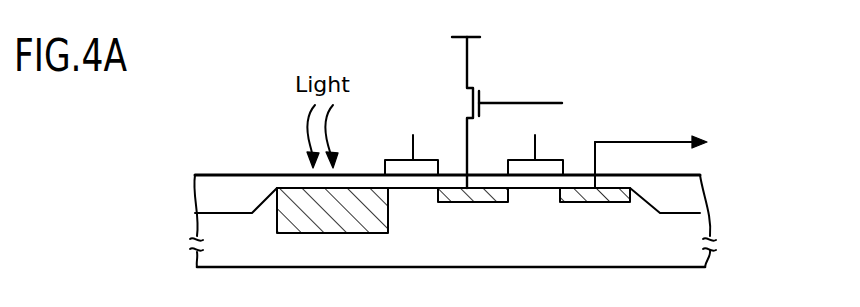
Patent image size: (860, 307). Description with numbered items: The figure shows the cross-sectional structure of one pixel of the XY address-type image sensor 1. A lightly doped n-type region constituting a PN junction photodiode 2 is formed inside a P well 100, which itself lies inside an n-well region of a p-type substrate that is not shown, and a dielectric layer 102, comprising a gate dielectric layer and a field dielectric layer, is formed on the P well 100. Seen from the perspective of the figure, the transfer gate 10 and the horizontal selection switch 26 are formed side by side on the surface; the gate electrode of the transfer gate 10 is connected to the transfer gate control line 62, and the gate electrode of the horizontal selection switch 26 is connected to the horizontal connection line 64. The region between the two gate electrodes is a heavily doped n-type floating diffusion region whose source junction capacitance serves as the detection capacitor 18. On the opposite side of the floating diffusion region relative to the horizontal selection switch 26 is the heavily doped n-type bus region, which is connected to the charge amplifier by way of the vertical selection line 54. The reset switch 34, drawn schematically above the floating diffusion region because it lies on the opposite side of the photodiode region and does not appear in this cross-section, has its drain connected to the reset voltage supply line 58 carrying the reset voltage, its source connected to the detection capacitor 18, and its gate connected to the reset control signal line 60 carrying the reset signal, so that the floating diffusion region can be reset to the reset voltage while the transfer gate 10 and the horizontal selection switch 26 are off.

The XY address-type image sensor 1 is at (677, 89).
The photodiode 2 is at (331, 245).
The transfer gate 10 is at (415, 210).
The horizontal selection switch 26 is at (540, 210).
The reset switch 34 is at (462, 103).
The P well 100 is at (263, 257).
The dielectric layer 102 is at (690, 193).
The detection capacitor 18 is at (463, 203).
The vertical selection line 54 is at (598, 203).
The reset voltage supply line 58 is at (515, 39).
The reset control signal line 60 is at (568, 99).
The transfer gate control line 62 is at (400, 143).
The horizontal connection line 64 is at (542, 143).